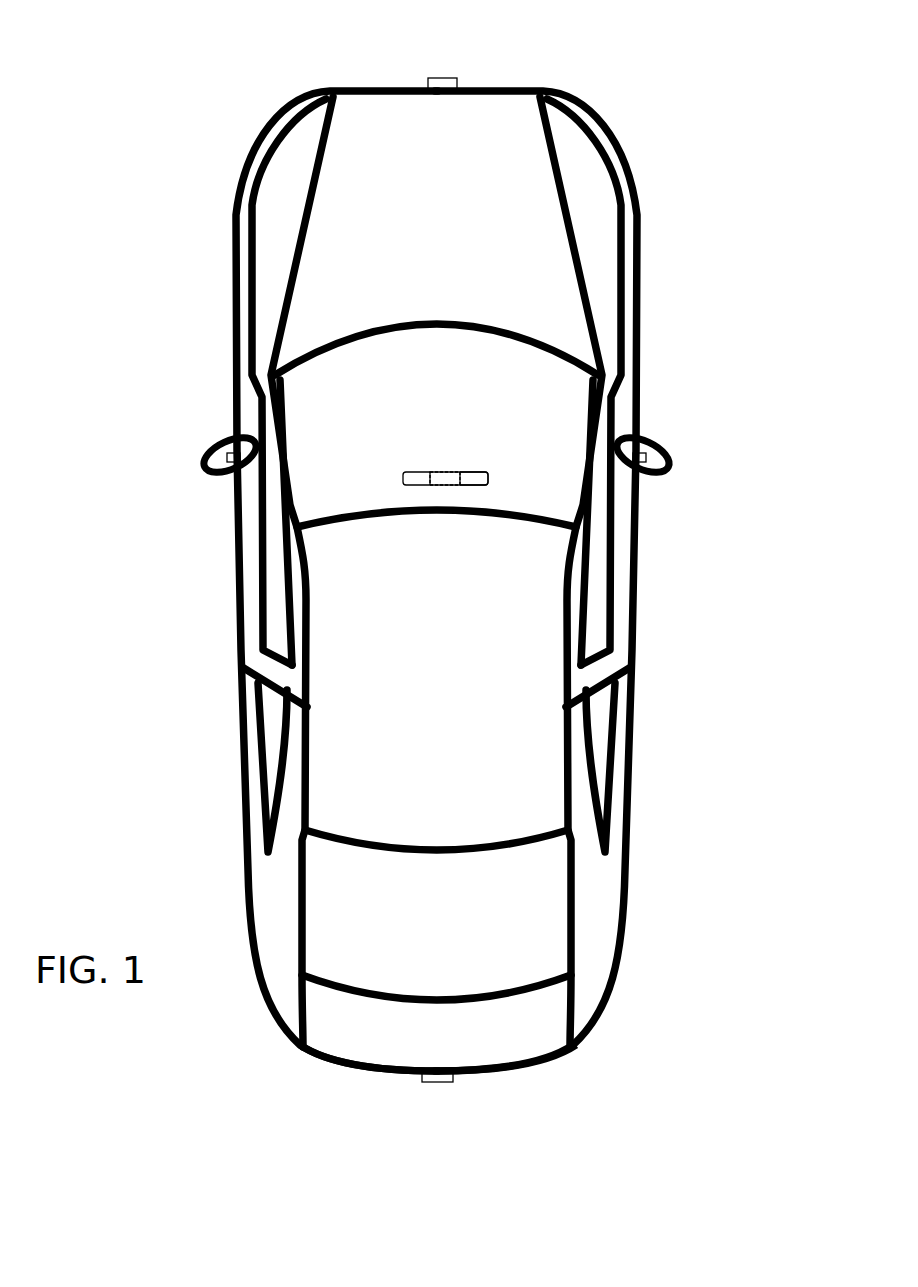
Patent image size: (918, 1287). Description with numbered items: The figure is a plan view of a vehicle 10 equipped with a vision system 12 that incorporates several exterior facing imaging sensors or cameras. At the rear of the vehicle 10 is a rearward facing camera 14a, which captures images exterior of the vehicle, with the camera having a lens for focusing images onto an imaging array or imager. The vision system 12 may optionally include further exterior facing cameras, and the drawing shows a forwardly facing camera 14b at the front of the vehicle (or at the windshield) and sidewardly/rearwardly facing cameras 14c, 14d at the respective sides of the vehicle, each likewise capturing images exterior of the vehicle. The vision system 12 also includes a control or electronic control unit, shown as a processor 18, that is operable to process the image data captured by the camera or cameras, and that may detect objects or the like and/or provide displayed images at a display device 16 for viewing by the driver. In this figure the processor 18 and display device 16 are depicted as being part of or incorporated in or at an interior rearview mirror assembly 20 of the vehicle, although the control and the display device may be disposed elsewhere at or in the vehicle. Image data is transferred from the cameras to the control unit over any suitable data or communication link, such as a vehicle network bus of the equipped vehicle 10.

The vehicle 10 is at (187, 183).
The vision system 12 is at (387, 1102).
The rearward facing camera 14a is at (440, 1082).
The forwardly facing camera 14b is at (447, 78).
The sidewardly/rearwardly facing camera 14c is at (220, 448).
The sidewardly/rearwardly facing camera 14d is at (647, 452).
The display device 16 is at (420, 475).
The processor 18 is at (442, 473).
The interior rearview mirror assembly 20 is at (490, 473).